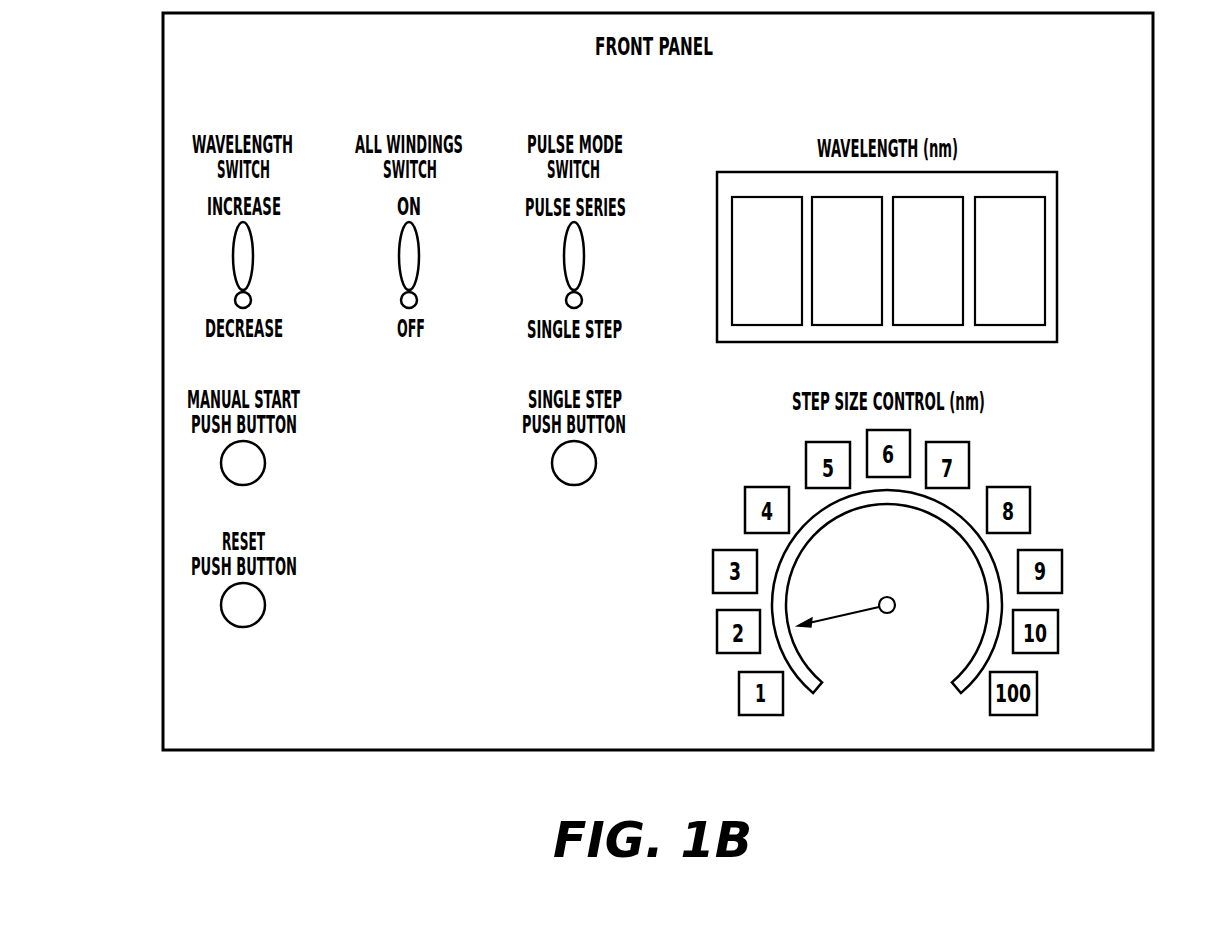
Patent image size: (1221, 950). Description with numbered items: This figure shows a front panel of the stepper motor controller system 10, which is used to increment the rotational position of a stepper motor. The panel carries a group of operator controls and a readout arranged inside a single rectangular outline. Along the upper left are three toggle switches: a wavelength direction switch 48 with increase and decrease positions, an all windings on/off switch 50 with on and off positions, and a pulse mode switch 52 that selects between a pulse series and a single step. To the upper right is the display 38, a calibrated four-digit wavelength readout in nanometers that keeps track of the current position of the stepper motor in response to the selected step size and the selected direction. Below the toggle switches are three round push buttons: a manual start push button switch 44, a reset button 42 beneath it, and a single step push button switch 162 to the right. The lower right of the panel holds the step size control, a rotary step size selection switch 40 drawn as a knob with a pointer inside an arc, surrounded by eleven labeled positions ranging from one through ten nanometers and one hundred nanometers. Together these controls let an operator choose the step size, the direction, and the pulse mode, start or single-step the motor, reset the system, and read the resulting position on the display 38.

The stepper motor controller system 10 is at (1153, 38).
The display 38 is at (1057, 185).
The rotary step size selection switch 40 is at (895, 605).
The reset button 42 is at (265, 607).
The manual start push button switch 44 is at (265, 465).
The wavelength direction switch 48 is at (250, 262).
The all windings on/off switch 50 is at (416, 262).
The pulse mode switch 52 is at (581, 262).
The single step push button switch 162 is at (596, 465).